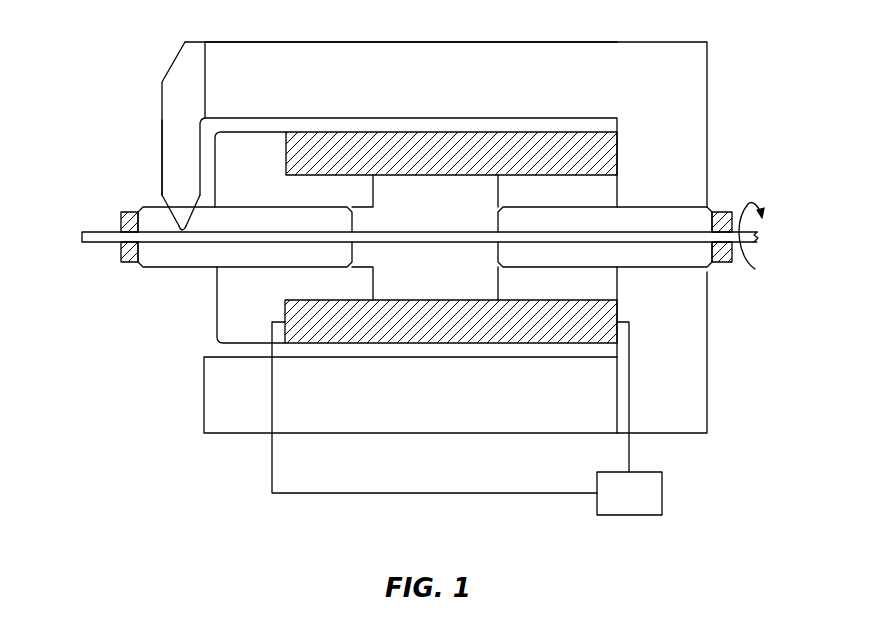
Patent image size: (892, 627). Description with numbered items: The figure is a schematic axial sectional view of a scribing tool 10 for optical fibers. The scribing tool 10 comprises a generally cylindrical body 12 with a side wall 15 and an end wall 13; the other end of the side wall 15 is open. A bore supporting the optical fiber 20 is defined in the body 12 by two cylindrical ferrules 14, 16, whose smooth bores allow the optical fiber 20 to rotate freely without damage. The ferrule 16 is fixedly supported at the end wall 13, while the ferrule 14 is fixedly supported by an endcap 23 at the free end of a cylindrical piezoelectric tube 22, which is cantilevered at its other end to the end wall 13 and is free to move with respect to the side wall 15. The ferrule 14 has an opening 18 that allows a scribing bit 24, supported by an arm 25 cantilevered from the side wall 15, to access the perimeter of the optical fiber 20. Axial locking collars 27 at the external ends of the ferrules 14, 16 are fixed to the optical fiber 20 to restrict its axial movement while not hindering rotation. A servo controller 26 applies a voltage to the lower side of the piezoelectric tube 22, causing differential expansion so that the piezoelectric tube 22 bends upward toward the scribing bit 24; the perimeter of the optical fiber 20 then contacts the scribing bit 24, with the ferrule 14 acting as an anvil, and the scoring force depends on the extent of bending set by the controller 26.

The scribing tool 10 is at (181, 436).
The body 12 is at (682, 68).
The end wall 13 is at (697, 387).
The ferrule 14 is at (150, 260).
The side wall 15 is at (459, 55).
The ferrule 16 is at (703, 260).
The opening 18 is at (167, 206).
The optical fiber 20 is at (407, 243).
The piezoelectric tube 22 is at (472, 337).
The endcap 23 is at (222, 323).
The scribing bit 24 is at (182, 234).
The arm 25 is at (168, 125).
The servo controller 26 is at (617, 506).
The axial locking collars 27 is at (120, 218).